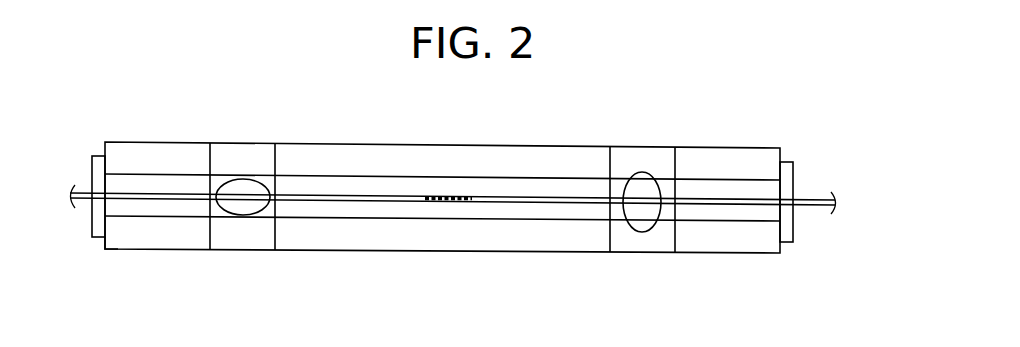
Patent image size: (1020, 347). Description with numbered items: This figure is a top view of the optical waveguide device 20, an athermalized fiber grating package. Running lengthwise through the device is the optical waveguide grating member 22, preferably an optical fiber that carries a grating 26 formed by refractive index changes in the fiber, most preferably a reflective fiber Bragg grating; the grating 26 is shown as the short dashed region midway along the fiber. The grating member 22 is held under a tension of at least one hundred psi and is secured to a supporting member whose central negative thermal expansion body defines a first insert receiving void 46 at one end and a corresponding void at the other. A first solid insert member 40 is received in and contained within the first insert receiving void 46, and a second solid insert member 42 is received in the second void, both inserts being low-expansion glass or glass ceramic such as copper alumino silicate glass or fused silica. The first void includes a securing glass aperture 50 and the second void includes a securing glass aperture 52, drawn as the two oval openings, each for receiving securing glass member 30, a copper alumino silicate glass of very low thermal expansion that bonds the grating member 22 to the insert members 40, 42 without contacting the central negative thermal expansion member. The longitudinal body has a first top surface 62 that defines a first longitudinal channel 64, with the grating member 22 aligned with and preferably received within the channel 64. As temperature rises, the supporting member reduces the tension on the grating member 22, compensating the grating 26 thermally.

The optical waveguide device 20 is at (110, 119).
The optical waveguide grating member 22 is at (495, 186).
The grating 26 is at (443, 182).
The securing glass member 30 is at (243, 174).
The first solid insert member 40 is at (82, 170).
The second solid insert member 42 is at (795, 180).
The first insert receiving void 46 is at (96, 247).
The securing glass aperture 50 is at (268, 222).
The securing glass aperture 52 is at (596, 230).
The first top surface 62 is at (428, 242).
The first longitudinal channel 64 is at (365, 162).